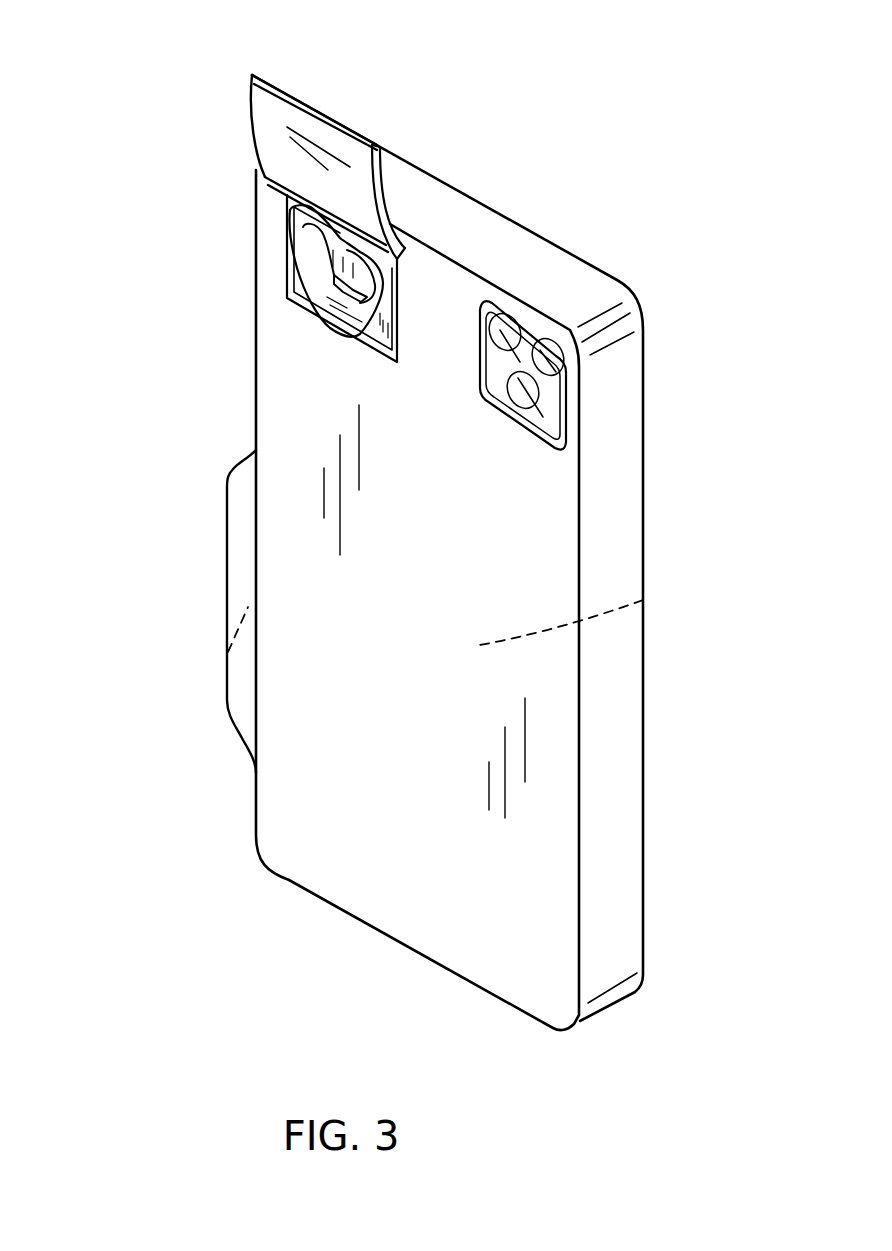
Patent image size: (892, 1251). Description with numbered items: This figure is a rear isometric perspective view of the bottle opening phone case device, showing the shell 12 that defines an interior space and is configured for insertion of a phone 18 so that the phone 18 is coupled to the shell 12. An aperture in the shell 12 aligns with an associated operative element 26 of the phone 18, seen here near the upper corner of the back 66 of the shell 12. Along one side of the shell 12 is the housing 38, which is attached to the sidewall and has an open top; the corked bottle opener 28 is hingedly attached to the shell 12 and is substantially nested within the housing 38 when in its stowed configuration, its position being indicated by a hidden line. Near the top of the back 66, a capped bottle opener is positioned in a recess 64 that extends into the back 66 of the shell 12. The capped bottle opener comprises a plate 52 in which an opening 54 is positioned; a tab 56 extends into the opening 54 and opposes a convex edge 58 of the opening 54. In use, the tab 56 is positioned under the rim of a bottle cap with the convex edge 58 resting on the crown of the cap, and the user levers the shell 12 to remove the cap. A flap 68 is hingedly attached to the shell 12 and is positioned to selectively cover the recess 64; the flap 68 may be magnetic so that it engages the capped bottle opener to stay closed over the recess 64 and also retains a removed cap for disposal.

The shell 12 is at (615, 710).
The phone 18 is at (643, 600).
The operative element 26 is at (523, 357).
The corked bottle opener 28 is at (228, 652).
The housing 38 is at (243, 542).
The plate 52 is at (387, 287).
The opening 54 is at (333, 258).
The tab 56 is at (340, 300).
The convex edge 58 is at (339, 235).
The recess 64 is at (395, 328).
The back 66 is at (380, 740).
The flap 68 is at (280, 130).